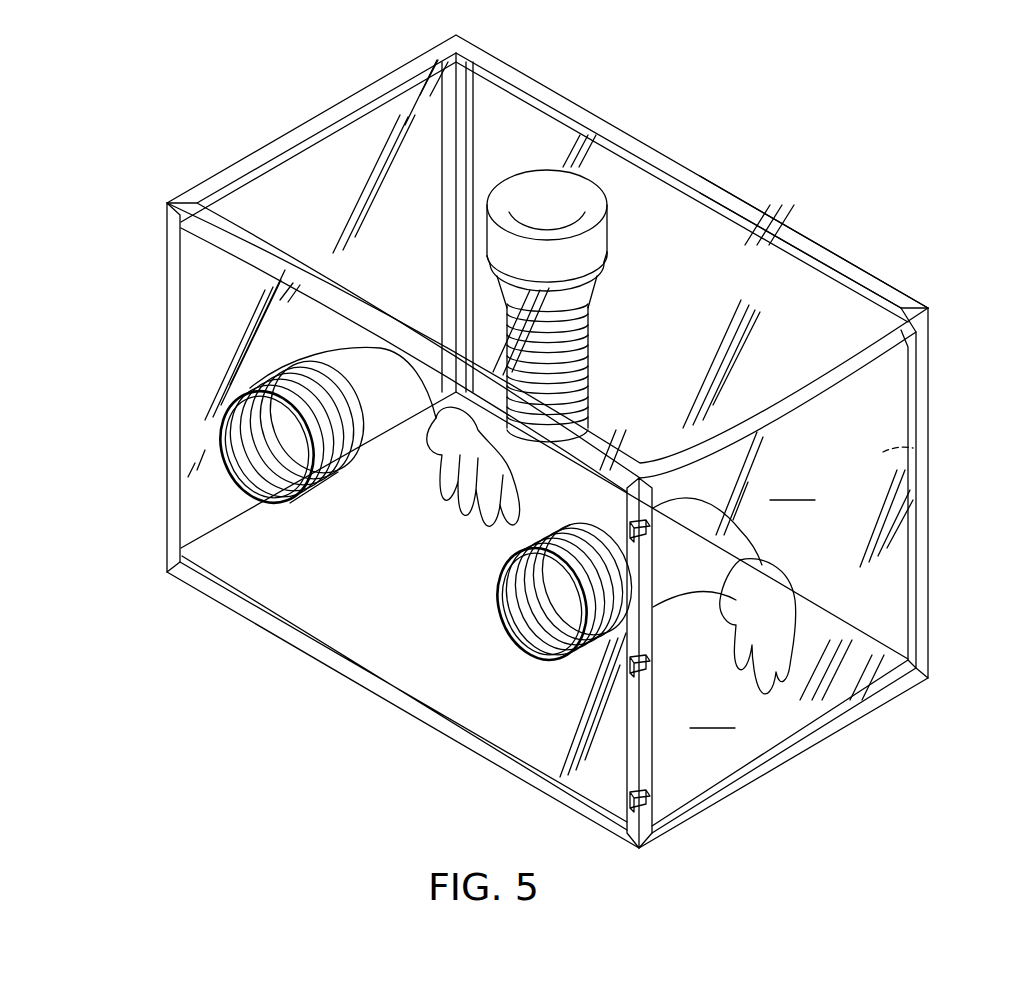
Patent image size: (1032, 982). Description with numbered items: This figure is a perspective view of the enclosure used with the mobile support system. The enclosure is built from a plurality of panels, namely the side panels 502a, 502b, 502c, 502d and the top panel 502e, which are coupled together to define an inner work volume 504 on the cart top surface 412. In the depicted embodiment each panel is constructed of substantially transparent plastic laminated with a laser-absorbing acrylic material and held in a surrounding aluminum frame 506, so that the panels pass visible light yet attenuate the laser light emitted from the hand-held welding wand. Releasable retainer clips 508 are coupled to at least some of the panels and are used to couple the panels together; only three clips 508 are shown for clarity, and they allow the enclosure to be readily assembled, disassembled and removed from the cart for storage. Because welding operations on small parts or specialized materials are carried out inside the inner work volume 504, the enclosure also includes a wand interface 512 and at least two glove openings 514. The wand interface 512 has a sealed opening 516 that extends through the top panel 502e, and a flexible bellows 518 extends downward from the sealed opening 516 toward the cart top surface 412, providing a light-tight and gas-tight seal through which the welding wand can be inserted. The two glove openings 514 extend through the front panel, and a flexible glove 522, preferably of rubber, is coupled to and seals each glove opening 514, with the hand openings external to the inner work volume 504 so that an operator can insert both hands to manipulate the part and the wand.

The cart top surface 412 is at (712, 716).
The side panel 502a is at (517, 735).
The side panel 502b is at (772, 745).
The side panel 502c is at (884, 447).
The side panel 502d is at (207, 289).
The top panel 502e is at (798, 276).
The inner work volume 504 is at (792, 488).
The aluminum frame 506 is at (838, 365).
The releasable retainer clips 508 is at (650, 532).
The wand interface 512 is at (608, 238).
The glove openings 514 is at (262, 478).
The sealed opening 516 is at (522, 192).
The flexible bellows 518 is at (588, 362).
The flexible glove 522 is at (462, 492).